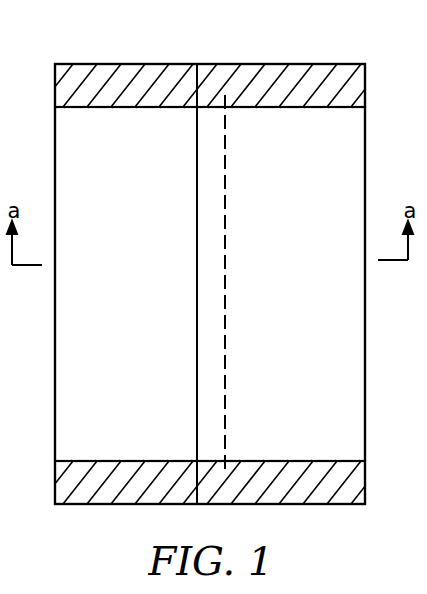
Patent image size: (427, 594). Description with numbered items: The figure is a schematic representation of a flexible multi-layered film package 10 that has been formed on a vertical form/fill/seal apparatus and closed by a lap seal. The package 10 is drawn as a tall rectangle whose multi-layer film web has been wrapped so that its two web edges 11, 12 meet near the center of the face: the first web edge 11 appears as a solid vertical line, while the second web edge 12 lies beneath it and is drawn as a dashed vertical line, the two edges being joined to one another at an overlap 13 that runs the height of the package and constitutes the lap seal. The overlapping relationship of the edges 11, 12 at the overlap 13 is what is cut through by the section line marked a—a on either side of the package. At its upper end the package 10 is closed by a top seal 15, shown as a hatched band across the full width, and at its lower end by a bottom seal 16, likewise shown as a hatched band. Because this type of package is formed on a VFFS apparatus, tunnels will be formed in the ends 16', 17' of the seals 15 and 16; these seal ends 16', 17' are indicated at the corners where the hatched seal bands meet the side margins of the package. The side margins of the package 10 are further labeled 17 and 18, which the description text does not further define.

The package 10 is at (55, 320).
The web edge 11 is at (197, 272).
The web edge 12 is at (227, 291).
The overlap 13 is at (207, 150).
The top seal 15 is at (365, 85).
The bottom seal 16 is at (210, 472).
The seal end 16' is at (391, 291).
The left side edge 17 is at (33, 284).
The seal end 17' is at (37, 294).
The right side edge 18 is at (366, 378).